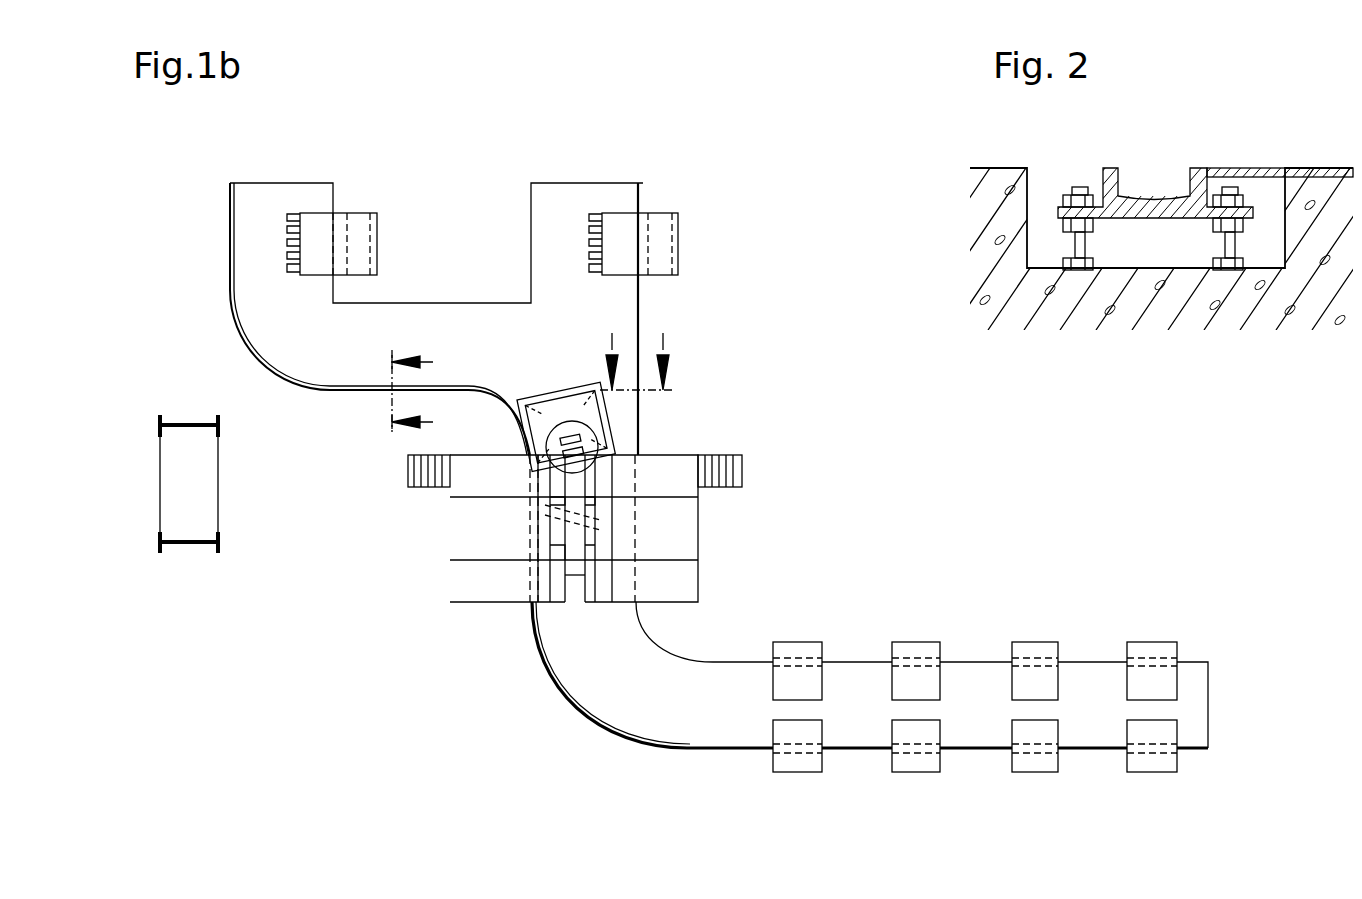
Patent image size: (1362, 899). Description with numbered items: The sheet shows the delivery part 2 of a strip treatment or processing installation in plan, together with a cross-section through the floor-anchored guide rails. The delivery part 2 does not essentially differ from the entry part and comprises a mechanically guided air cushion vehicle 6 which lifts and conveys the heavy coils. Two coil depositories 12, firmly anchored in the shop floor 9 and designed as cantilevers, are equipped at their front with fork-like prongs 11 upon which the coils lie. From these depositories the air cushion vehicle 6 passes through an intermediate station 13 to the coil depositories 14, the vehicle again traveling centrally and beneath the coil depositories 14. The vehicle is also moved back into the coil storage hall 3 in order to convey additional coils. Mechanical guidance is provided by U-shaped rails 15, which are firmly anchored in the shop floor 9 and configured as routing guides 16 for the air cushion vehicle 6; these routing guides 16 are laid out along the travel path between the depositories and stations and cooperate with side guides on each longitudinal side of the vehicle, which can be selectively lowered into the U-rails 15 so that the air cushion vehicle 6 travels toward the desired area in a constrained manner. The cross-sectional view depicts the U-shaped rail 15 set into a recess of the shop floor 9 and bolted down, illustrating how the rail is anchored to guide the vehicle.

In FIG. 1B, the delivery part 2 is at (737, 157).
In FIG. 1B, the coil storage hall 3 is at (222, 537).
In FIG. 1B, the air cushion vehicle 6 is at (600, 410).
In FIG. 1B, the shop floor 9 is at (584, 668).
In FIG. 2, the shop floor 9 is at (1303, 168).
In FIG. 1B, the prongs 11 is at (290, 260).
In FIG. 1B, the coil depositories 12 is at (363, 228).
In FIG. 1B, the intermediate station 13 is at (695, 447).
In FIG. 1B, the coil depositories 14 is at (900, 648).
In FIG. 2, the U-shaped rails 15 is at (1118, 170).
In FIG. 1B, the routing guides 16 is at (645, 298).